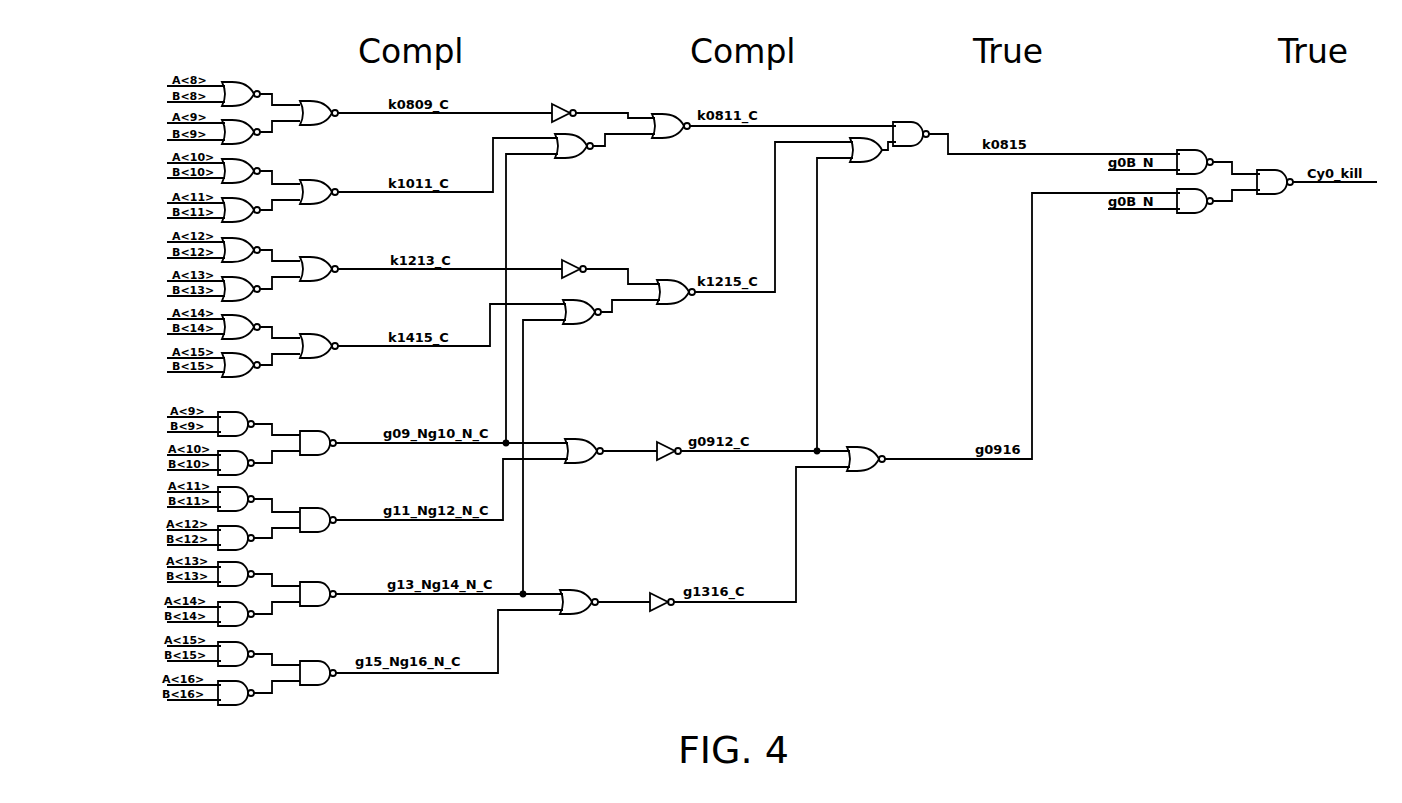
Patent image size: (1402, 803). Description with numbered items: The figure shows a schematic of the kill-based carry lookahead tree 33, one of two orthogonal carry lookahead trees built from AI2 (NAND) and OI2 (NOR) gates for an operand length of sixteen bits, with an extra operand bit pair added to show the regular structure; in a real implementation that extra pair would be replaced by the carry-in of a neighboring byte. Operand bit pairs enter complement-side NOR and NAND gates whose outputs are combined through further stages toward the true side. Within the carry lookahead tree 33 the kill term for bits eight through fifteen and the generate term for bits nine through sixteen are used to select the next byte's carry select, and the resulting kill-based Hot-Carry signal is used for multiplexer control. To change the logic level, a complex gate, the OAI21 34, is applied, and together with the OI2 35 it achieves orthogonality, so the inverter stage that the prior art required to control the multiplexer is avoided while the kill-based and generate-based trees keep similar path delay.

The kill-based carry lookahead tree 33 is at (1074, 353).
The OAI21 complex gate 34 is at (897, 101).
The OI2 gate 35 is at (864, 484).